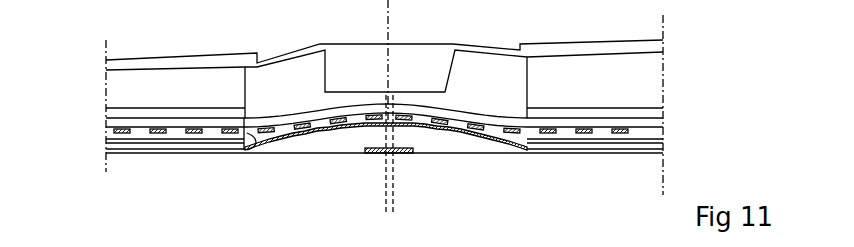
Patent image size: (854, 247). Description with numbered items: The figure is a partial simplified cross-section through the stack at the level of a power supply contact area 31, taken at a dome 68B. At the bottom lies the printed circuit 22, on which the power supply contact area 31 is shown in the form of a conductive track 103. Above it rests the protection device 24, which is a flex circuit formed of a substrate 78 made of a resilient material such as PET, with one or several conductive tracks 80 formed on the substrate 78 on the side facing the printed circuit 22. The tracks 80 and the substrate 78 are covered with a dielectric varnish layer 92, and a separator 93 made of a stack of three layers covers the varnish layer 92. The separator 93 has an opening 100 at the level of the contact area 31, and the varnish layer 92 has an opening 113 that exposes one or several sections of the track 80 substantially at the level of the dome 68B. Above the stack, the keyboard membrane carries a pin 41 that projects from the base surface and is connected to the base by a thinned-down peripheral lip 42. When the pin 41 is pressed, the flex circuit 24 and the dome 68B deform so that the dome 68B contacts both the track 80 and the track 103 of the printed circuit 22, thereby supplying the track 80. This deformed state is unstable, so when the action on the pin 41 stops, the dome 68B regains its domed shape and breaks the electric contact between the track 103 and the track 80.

The pin 41 is at (412, 53).
The thinned-down peripheral lip 42 is at (493, 48).
The substrate 78 is at (658, 118).
The conductive track 80 is at (112, 131).
The varnish layer 92 is at (103, 138).
The separator 93 is at (106, 140).
The protection device 24 is at (664, 120).
The printed circuit 22 is at (647, 171).
The opening 113 is at (251, 140).
The power supply contact area 31 is at (366, 163).
The conductive track 103 is at (396, 156).
The dome 68B is at (498, 138).
The opening 100 is at (522, 150).